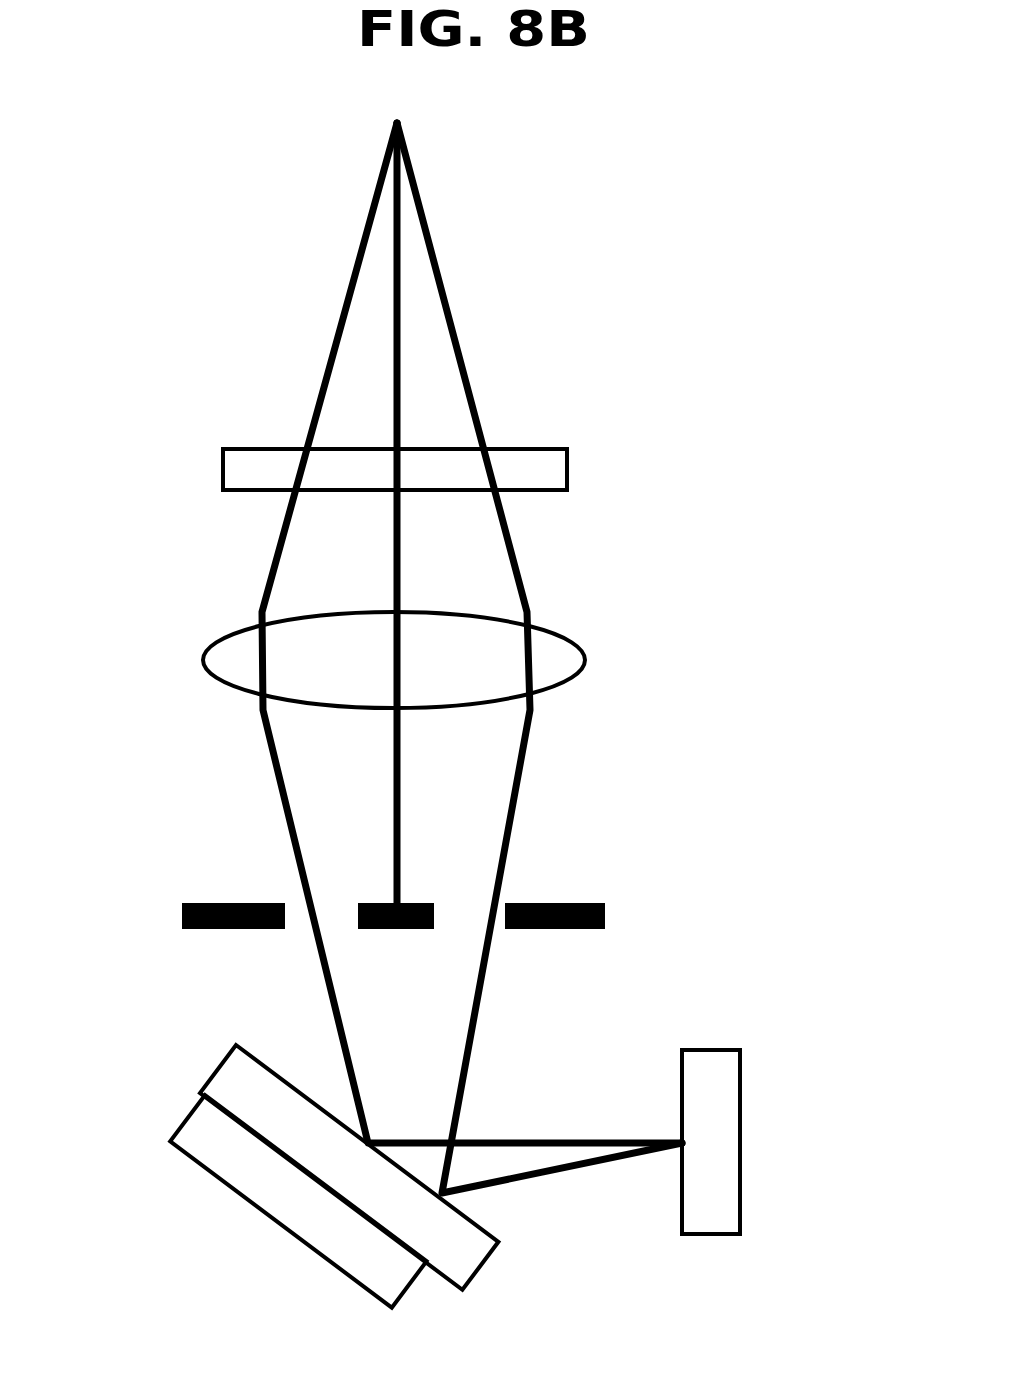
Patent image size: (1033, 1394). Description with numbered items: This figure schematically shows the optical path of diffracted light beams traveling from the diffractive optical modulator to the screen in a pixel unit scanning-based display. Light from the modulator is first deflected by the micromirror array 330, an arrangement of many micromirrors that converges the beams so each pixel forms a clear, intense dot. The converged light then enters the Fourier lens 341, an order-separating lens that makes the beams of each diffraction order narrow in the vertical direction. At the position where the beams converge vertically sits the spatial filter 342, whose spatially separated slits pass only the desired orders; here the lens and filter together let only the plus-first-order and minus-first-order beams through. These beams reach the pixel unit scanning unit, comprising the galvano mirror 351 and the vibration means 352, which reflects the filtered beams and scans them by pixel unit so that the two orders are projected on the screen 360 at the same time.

The micromirror array 330 is at (567, 468).
The Fourier lens 341 is at (585, 660).
The spatial filter 342 is at (605, 912).
The galvano mirror 351 is at (215, 1072).
The vibration means 352 is at (175, 1118).
The screen 360 is at (740, 1143).